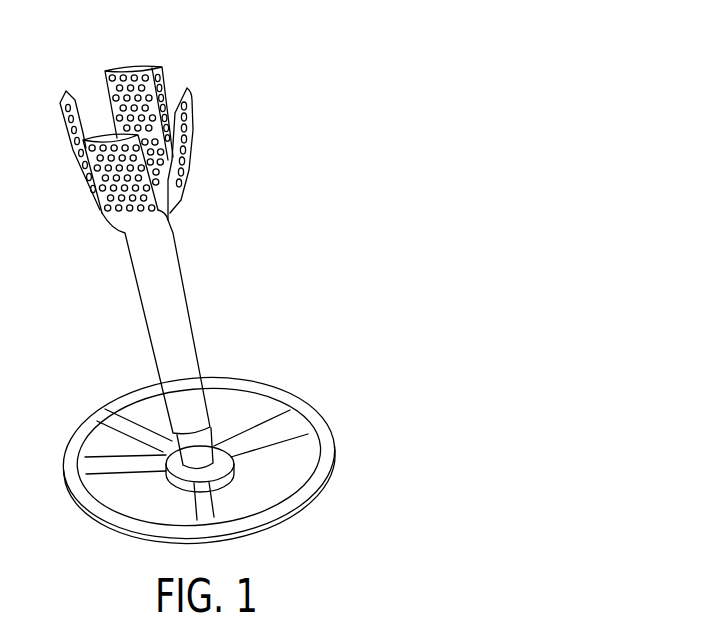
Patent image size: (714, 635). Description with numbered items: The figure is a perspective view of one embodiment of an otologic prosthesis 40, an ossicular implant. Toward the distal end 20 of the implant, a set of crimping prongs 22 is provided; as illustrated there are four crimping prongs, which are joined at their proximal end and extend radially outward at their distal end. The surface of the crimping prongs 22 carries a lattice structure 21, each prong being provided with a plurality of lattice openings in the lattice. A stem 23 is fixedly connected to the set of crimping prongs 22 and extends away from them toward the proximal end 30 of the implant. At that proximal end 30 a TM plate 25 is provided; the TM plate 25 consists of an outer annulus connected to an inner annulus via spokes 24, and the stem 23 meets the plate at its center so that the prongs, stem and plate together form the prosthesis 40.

The distal end of implant 20 is at (146, 70).
The lattice structure 21 is at (188, 117).
The crimping prong 22 is at (140, 147).
The stem 23 is at (177, 292).
The spoke 24 is at (287, 421).
The TM plate 25 is at (317, 452).
The proximal end of implant 30 is at (232, 483).
The otologic prosthesis 40 is at (350, 133).